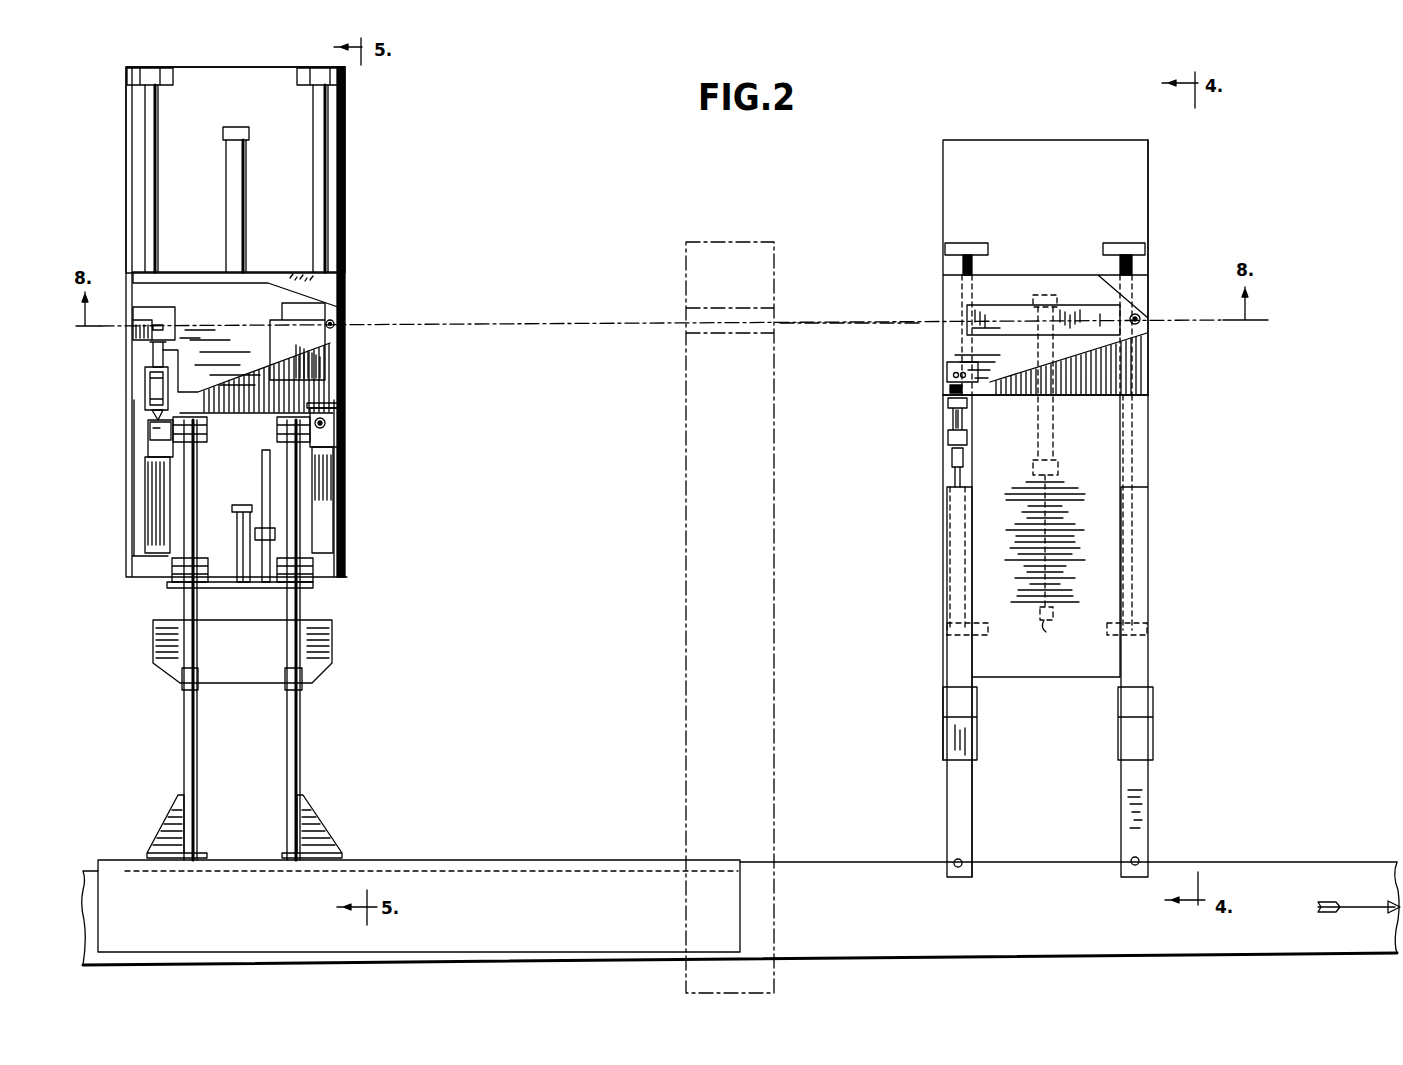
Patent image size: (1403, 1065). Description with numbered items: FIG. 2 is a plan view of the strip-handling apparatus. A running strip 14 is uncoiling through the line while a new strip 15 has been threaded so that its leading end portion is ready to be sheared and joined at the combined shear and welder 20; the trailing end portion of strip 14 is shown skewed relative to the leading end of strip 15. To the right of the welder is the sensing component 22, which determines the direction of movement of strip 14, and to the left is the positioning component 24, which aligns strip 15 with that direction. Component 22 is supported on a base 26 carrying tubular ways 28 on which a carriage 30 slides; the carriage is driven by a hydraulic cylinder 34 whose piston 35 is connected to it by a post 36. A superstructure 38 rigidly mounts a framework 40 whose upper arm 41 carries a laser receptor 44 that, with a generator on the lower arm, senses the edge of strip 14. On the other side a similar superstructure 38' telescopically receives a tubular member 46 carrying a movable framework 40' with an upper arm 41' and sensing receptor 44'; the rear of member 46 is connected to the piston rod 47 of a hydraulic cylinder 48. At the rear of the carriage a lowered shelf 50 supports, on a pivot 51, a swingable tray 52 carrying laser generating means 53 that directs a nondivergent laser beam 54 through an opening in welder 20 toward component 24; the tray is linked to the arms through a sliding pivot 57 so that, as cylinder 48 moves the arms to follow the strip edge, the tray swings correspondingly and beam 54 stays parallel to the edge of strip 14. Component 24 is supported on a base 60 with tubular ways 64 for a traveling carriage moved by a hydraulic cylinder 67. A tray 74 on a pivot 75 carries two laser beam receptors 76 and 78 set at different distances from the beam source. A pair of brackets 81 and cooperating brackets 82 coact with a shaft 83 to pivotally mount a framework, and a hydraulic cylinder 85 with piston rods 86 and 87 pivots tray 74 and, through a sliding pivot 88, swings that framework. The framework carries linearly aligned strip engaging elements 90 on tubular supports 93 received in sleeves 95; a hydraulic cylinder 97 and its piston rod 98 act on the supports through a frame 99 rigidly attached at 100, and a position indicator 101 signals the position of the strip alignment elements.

The strip 14 is at (1268, 872).
The strip 15 is at (503, 870).
The combined shear and welder 20 is at (770, 532).
The component 22 is at (1188, 416).
The component 24 is at (378, 493).
The base 26 is at (1042, 187).
The tubular ways 28 is at (975, 268).
The carriage 30 is at (1140, 480).
The hydraulic cylinder 34 is at (1050, 456).
The piston 35 is at (1050, 530).
The post 36 is at (1054, 621).
The superstructure 38 is at (1155, 508).
The superstructure 38' is at (940, 765).
The framework 40 is at (1152, 723).
The framework 40' is at (935, 723).
The upper arm 41 is at (1157, 795).
The upper arm 41' is at (935, 682).
The laser receptor 44 is at (1158, 849).
The laser beam receptor 44' is at (933, 850).
The tubular member 46 is at (948, 604).
The piston rod 47 is at (952, 458).
The hydraulic cylinder 48 is at (948, 422).
The lowered shelf 50 is at (1140, 380).
The pivot 51 is at (1143, 318).
The swingable tray 52 is at (950, 306).
The laser beam generating means 53 is at (1009, 295).
The laser beam 54 is at (832, 322).
The sliding pivot 57 is at (947, 373).
The base 60 is at (247, 103).
The tubular ways 64 is at (157, 140).
The hydraulic cylinder 67 is at (245, 170).
The tray 74 is at (203, 292).
The pivot 75 is at (345, 310).
The laser beam receptor 76 is at (326, 362).
The laser beam receptor 78 is at (138, 308).
The brackets 81 is at (343, 406).
The brackets 82 is at (333, 450).
The shaft 83 is at (343, 430).
The hydraulic cylinder 85 is at (145, 386).
The piston rod 86 is at (150, 365).
The piston rod 87 is at (152, 415).
The sliding pivot 88 is at (148, 428).
The strip engaging elements 90 is at (205, 850).
The tubular supports 93 is at (198, 470).
The sleeves 95 is at (207, 422).
The hydraulic cylinder 97 is at (240, 505).
The piston rod 98 is at (244, 607).
The frame 99 is at (250, 628).
The rigid attachments 100 is at (199, 680).
The position indicator 101 is at (265, 480).